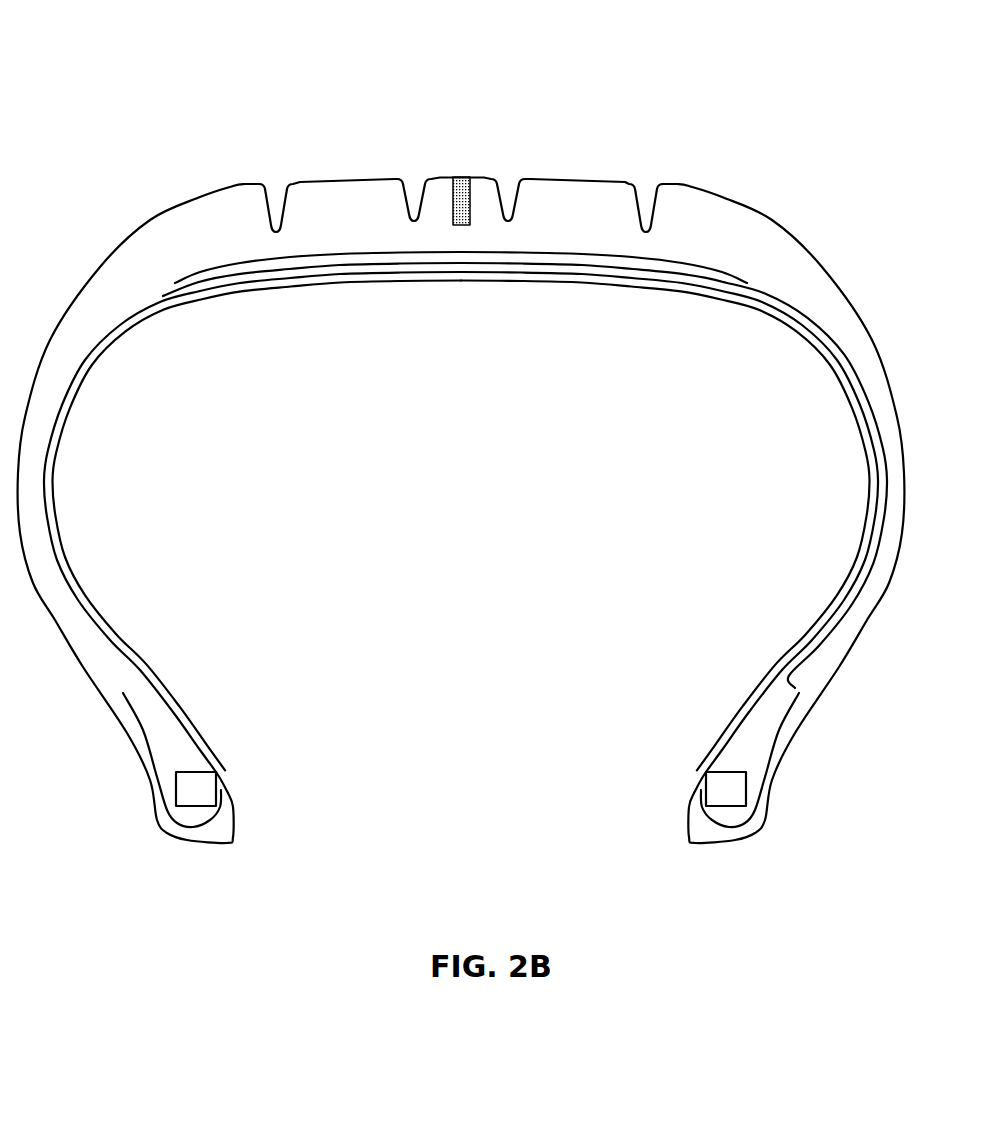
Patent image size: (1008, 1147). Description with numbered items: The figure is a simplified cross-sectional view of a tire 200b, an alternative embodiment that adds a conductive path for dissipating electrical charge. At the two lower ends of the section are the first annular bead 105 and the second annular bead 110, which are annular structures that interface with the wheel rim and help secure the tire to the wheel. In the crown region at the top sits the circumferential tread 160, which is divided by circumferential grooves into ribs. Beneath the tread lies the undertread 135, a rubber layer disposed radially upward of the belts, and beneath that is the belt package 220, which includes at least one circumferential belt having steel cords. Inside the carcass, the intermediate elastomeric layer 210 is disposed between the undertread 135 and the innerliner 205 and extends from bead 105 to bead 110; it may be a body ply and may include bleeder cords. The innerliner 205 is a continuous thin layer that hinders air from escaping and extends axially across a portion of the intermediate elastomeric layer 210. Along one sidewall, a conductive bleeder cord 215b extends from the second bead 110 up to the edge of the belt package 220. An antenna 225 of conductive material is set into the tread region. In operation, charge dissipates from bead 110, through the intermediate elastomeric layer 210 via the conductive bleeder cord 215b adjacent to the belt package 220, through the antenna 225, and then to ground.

The tire 200b is at (131, 50).
The first annular bead 105 is at (233, 813).
The second annular bead 110 is at (692, 813).
The undertread 135 is at (335, 254).
The circumferential tread 160 is at (577, 192).
The innerliner 205 is at (488, 281).
The intermediate elastomeric layer 210 is at (50, 447).
The conductive bleeder cord 215b is at (873, 423).
The belt package 220 is at (165, 297).
The antenna 225 is at (461, 177).